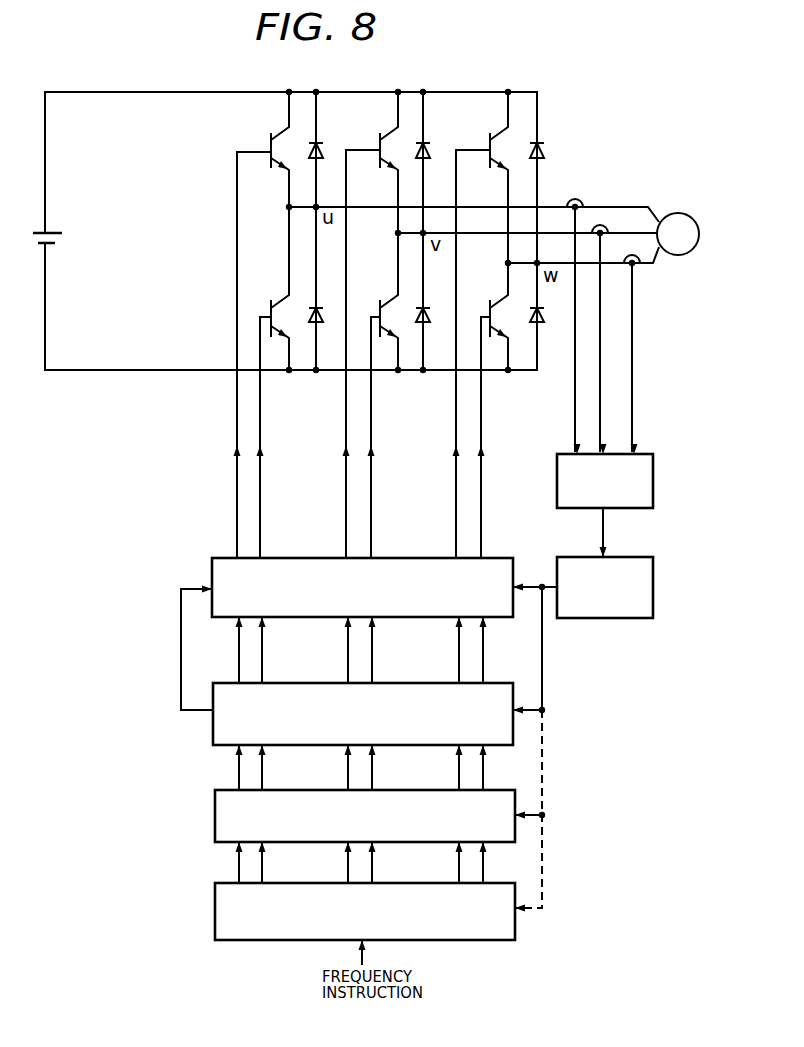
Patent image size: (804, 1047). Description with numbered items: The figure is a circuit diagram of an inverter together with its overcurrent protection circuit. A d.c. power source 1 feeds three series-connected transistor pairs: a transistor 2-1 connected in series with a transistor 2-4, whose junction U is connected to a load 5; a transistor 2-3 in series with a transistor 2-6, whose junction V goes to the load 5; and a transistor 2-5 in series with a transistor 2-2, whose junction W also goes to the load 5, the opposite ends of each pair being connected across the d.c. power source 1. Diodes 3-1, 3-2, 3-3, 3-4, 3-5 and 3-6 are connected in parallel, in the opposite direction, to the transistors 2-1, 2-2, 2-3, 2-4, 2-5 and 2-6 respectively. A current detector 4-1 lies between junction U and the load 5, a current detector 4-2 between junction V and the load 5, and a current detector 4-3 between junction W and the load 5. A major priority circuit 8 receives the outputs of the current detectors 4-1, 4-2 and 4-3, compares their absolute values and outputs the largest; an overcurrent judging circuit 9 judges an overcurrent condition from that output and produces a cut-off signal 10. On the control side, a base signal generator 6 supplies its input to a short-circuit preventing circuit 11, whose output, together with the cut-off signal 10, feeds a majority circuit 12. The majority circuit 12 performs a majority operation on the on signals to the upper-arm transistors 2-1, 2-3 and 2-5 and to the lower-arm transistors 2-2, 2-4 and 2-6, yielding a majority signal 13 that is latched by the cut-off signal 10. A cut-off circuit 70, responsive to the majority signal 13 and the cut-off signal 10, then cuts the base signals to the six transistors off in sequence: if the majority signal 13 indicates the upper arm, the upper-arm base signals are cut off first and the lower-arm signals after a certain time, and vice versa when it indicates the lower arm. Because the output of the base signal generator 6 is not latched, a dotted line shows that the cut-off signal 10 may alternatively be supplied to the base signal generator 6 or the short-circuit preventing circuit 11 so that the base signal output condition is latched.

The d.c. power source 1 is at (65, 241).
The transistor 2-1 is at (268, 135).
The transistor 2-2 is at (490, 300).
The transistor 2-3 is at (380, 133).
The transistor 2-4 is at (271, 300).
The transistor 2-5 is at (490, 133).
The transistor 2-6 is at (380, 300).
The diode 3-1 is at (342, 139).
The diode 3-2 is at (543, 327).
The diode 3-3 is at (445, 139).
The diode 3-4 is at (320, 326).
The diode 3-5 is at (547, 150).
The diode 3-6 is at (428, 326).
The current detector 4-1 is at (575, 198).
The current detector 4-2 is at (606, 227).
The current detector 4-3 is at (637, 268).
The load 5 is at (672, 213).
The base signal generator 6 is at (215, 902).
The major priority circuit 8 is at (653, 467).
The overcurrent judging circuit 9 is at (653, 568).
The cut-off signal 10 is at (542, 650).
The short-circuit preventing circuit 11 is at (215, 807).
The majority circuit 12 is at (213, 733).
The majority signal 13 is at (181, 640).
The cut-off circuit 70 is at (303, 558).